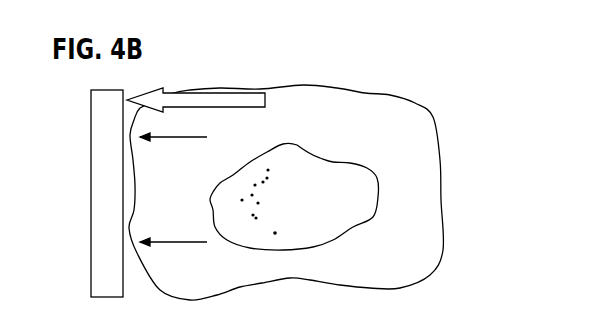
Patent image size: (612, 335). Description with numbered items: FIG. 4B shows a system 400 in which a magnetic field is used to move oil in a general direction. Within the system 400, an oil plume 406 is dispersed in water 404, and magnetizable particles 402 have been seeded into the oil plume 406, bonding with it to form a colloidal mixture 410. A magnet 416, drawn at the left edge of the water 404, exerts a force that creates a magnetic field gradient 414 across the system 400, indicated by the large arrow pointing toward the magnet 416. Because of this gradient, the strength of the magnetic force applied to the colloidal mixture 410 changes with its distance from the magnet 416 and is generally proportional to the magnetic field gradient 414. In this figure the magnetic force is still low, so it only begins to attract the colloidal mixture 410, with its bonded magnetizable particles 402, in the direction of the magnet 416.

The system 400 is at (240, 55).
The magnetizable particles 402 is at (280, 233).
The water 404 is at (422, 165).
The oil plume 406 is at (342, 177).
The colloidal mixture 410 is at (300, 143).
The magnetic field gradient 414 is at (197, 100).
The magnet 416 is at (103, 127).